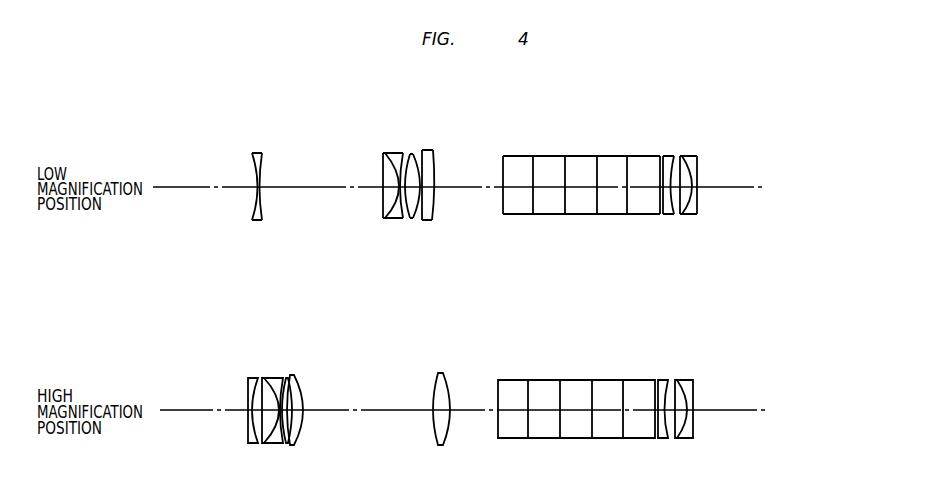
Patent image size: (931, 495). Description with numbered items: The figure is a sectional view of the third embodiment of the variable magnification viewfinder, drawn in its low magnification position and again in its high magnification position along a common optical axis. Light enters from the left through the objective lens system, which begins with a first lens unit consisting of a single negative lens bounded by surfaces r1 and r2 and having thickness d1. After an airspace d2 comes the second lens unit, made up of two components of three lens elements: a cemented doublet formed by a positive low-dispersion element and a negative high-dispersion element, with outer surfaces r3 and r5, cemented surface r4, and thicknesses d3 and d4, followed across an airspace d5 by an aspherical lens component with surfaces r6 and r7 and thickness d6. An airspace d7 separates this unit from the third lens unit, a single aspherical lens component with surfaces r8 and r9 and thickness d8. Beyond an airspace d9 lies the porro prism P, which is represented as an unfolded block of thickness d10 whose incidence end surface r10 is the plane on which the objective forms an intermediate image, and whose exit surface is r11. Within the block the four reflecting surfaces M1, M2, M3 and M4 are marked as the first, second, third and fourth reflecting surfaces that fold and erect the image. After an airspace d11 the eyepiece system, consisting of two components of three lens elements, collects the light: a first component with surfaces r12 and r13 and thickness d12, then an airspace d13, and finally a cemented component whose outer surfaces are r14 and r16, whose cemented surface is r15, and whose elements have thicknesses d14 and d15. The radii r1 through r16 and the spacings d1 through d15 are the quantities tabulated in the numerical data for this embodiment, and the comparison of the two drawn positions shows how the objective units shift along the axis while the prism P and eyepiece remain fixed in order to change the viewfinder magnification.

The lens thickness d1 is at (253, 187).
The airspace d2 is at (297, 187).
The lens thickness d3 is at (383, 181).
The lens thickness d4 is at (386, 152).
The airspace d5 is at (407, 153).
The lens thickness d6 is at (415, 153).
The airspace d7 is at (433, 153).
The lens thickness d8 is at (442, 156).
The airspace d9 is at (471, 187).
The prism thickness d10 is at (638, 187).
The airspace d11 is at (661, 186).
The lens thickness d12 is at (670, 187).
The airspace d13 is at (681, 187).
The lens thickness d14 is at (687, 185).
The lens thickness d15 is at (697, 182).
The radius of curvature r1 is at (252, 212).
The radius of curvature r2 is at (263, 205).
The radius of curvature r3 is at (383, 203).
The radius of curvature r4 is at (393, 219).
The radius of curvature r5 is at (397, 219).
The radius of curvature r6 is at (406, 220).
The radius of curvature r7 is at (416, 220).
The radius of curvature r8 is at (427, 221).
The radius of curvature r9 is at (434, 209).
The radius of curvature r10 is at (503, 207).
The radius of curvature r11 is at (662, 203).
The radius of curvature r12 is at (673, 207).
The radius of curvature r13 is at (681, 211).
The radius of curvature r14 is at (687, 213).
The radius of curvature r15 is at (690, 214).
The radius of curvature r16 is at (697, 208).
The first reflecting surface M1 is at (533, 159).
The second reflecting surface M2 is at (565, 159).
The third reflecting surface M3 is at (597, 159).
The fourth reflecting surface M4 is at (627, 159).
The porro prism P is at (577, 214).